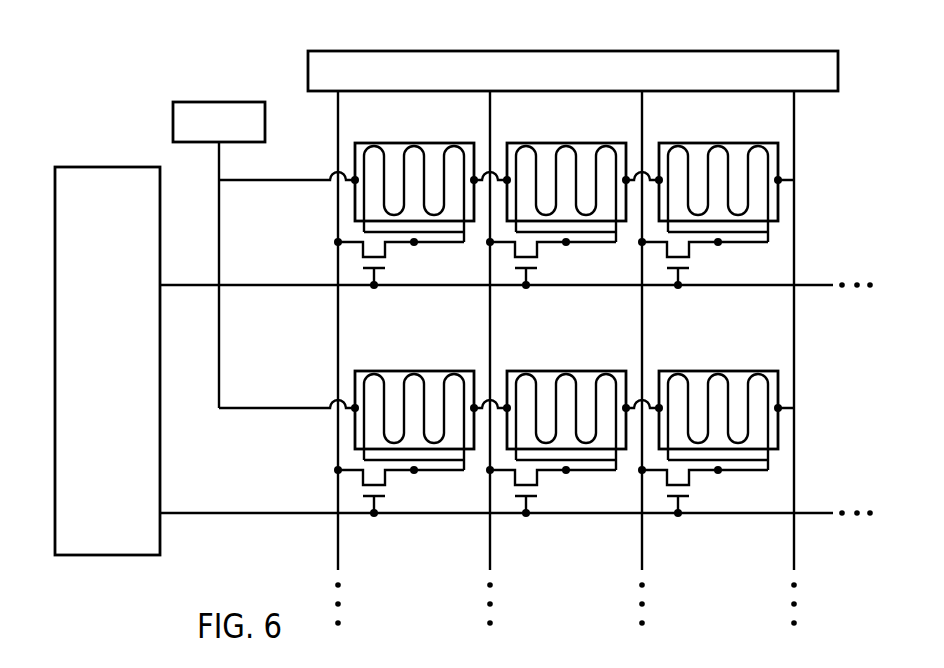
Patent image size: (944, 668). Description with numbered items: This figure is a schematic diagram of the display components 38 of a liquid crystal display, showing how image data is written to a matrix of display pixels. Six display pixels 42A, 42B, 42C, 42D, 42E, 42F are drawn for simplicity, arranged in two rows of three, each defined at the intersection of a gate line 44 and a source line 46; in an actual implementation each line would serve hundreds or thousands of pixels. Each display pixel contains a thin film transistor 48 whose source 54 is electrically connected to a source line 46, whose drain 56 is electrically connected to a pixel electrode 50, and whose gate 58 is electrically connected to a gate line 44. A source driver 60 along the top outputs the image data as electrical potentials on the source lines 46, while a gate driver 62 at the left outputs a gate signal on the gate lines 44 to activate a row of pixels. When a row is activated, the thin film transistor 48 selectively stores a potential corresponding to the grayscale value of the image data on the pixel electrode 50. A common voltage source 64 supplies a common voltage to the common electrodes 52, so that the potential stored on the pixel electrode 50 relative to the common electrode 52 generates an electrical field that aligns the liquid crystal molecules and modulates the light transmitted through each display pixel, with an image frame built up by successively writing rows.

The display components 38 is at (281, 26).
The source driver 60 is at (695, 51).
The gate driver 62 is at (92, 167).
The common voltage (Vcom) source 64 is at (203, 102).
The display pixel 42A is at (354, 118).
The display pixel 42B is at (474, 127).
The display pixel 42C is at (626, 127).
The display pixel 42D is at (322, 355).
The display pixel 42E is at (474, 355).
The display pixel 42F is at (626, 355).
The gate line 44 is at (815, 285).
The source line 46 is at (338, 565).
The thin film transistor 48 is at (392, 266).
The pixel electrode 50 is at (415, 142).
The common electrode 52 is at (430, 143).
The source 54 is at (337, 243).
The drain 56 is at (415, 244).
The gate 58 is at (375, 287).